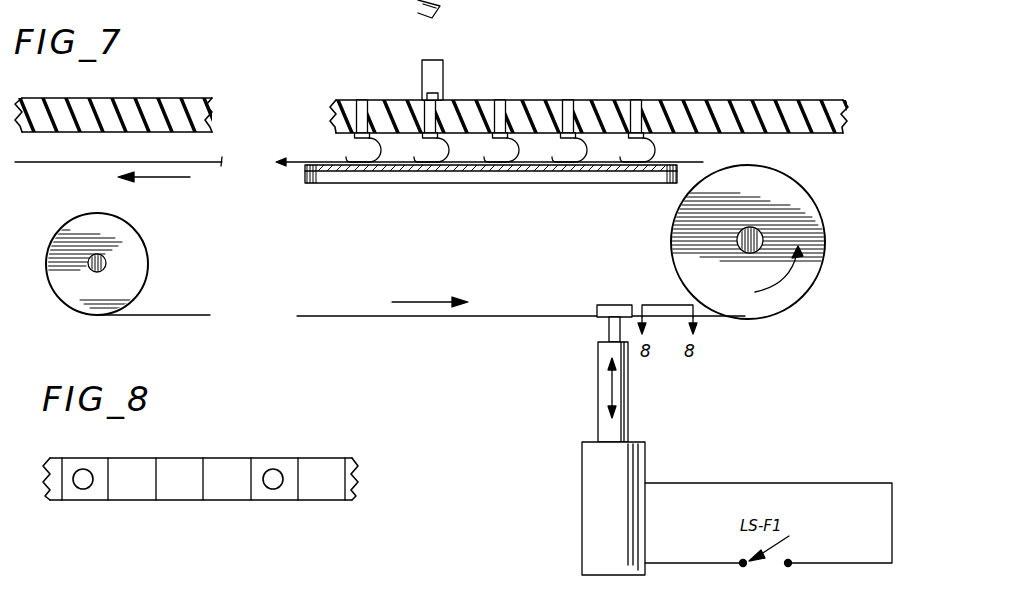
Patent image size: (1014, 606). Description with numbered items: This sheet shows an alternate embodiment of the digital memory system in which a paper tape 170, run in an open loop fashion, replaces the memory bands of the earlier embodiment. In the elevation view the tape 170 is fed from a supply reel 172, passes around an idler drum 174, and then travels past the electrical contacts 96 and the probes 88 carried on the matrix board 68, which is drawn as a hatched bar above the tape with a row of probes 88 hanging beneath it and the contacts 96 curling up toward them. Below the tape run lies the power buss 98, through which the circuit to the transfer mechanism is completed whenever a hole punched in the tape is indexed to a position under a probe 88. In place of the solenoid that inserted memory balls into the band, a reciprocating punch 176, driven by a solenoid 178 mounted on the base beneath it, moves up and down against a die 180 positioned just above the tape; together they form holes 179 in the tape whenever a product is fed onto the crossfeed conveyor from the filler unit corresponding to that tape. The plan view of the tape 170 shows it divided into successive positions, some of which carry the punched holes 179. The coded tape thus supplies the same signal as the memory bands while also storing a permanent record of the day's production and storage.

In FIG. 7, the matrix board 68 is at (697, 106).
In FIG. 7, the probe 88 is at (443, 80).
In FIG. 7, the electrical contacts 96 is at (628, 168).
In FIG. 7, the power buss 98 is at (466, 166).
In FIG. 7, the paper tape 170 is at (703, 166).
In FIG. 8, the paper tape 170 is at (175, 466).
In FIG. 7, the supply reel 172 is at (134, 252).
In FIG. 7, the idler drum 174 is at (812, 268).
In FIG. 7, the reciprocating punch 176 is at (628, 392).
In FIG. 7, the solenoid 178 is at (640, 510).
In FIG. 7, the die 180 is at (622, 305).
In FIG. 8, the holes 179 is at (88, 470).